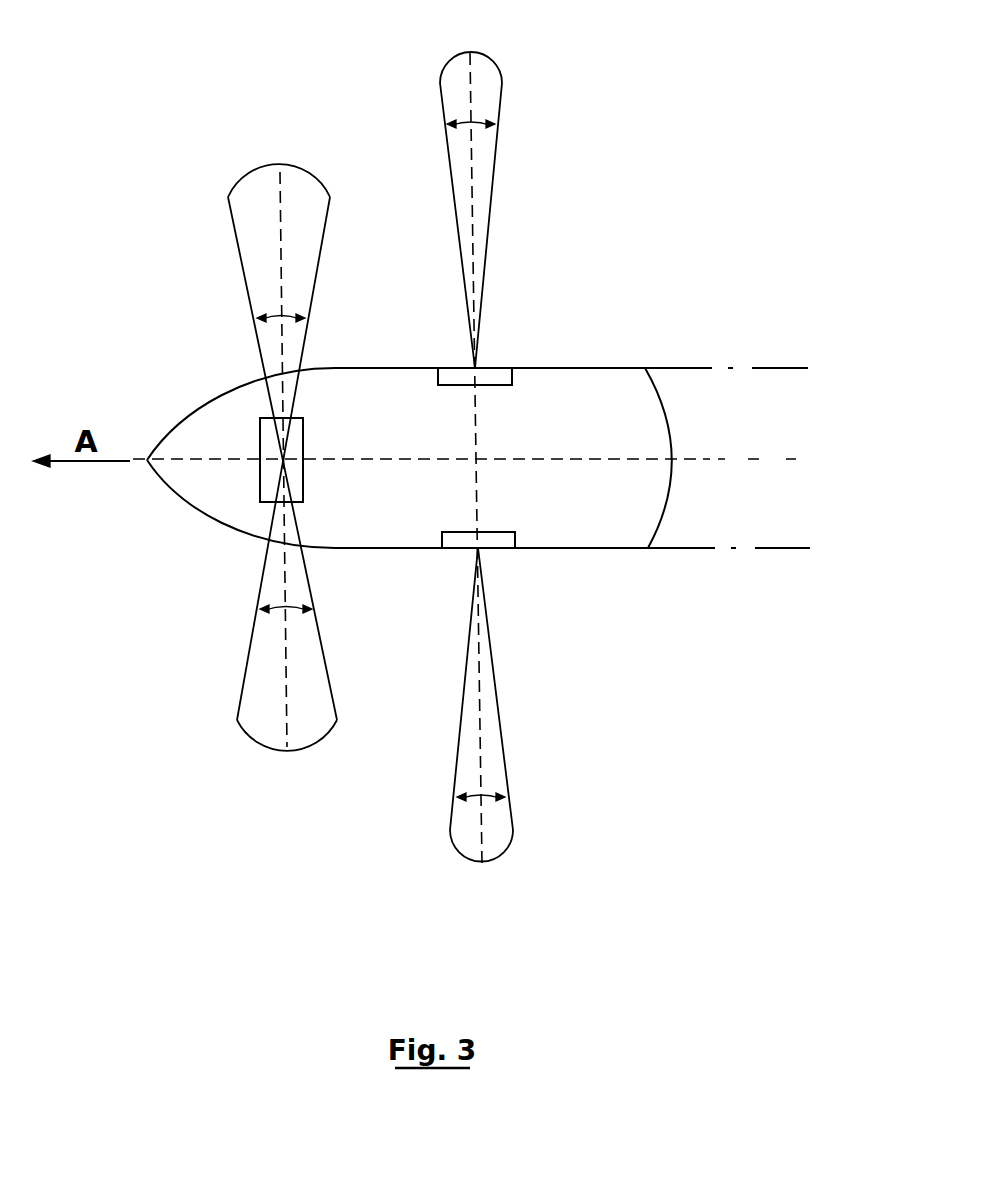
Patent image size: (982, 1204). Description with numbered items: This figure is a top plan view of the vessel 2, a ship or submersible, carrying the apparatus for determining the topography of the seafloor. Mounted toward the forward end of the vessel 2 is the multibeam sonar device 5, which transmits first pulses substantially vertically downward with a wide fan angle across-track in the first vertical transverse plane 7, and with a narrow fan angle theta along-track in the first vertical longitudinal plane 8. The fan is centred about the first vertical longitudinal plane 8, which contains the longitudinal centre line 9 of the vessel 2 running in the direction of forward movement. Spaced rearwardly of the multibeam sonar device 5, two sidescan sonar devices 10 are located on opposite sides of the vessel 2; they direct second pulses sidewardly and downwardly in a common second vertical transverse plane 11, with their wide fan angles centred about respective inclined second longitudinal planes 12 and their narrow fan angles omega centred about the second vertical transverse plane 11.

The vessel 2 is at (397, 550).
The multibeam sonar device 5 is at (262, 484).
The first vertical transverse plane 7 is at (278, 222).
The first vertical longitudinal plane 8 is at (562, 457).
The longitudinal centre line 9 is at (750, 455).
The sidescan sonar devices 10 is at (498, 377).
The second vertical transverse plane 11 is at (470, 78).
The second longitudinal planes 12 is at (687, 366).